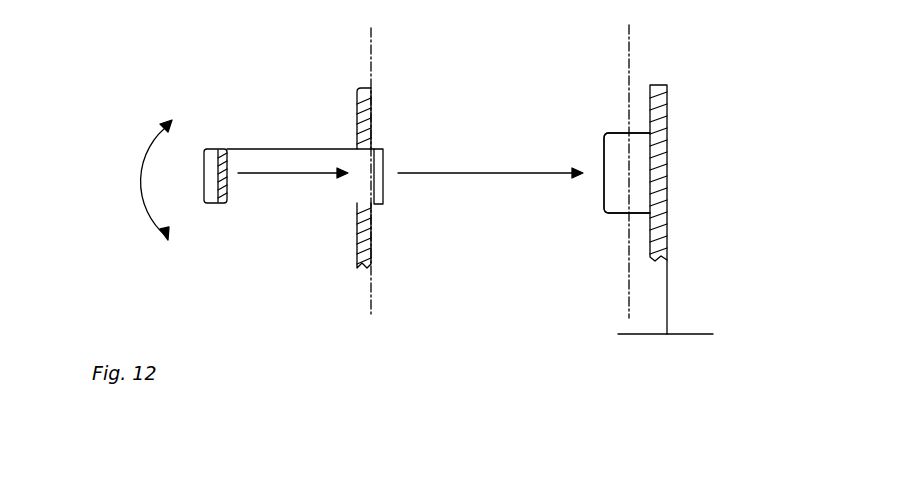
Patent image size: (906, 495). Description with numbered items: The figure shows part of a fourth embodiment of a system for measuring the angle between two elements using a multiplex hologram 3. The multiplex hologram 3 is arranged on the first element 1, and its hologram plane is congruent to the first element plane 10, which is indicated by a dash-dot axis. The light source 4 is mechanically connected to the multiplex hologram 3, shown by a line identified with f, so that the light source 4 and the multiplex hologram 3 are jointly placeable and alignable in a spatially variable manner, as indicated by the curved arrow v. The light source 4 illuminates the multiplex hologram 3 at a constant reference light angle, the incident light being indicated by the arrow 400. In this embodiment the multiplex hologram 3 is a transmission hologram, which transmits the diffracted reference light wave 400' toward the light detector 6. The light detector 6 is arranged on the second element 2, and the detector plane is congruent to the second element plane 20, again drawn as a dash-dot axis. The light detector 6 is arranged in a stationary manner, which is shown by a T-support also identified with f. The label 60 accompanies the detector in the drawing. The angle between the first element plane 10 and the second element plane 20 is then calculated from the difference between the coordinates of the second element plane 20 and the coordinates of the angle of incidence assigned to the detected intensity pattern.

The first element 1 is at (372, 255).
The second element 2 is at (660, 88).
The multiplex hologram 3 is at (377, 148).
The light source 4 is at (214, 152).
The light detector 6 is at (616, 207).
The workpiece 60 is at (627, 173).
The first element plane 10 is at (373, 40).
The second element plane 20 is at (630, 32).
The feed direction 400 is at (293, 210).
The diffracted reference light wave 400' is at (490, 136).
The mechanical connection f is at (290, 147).
The arrow of spatial variability v is at (137, 177).